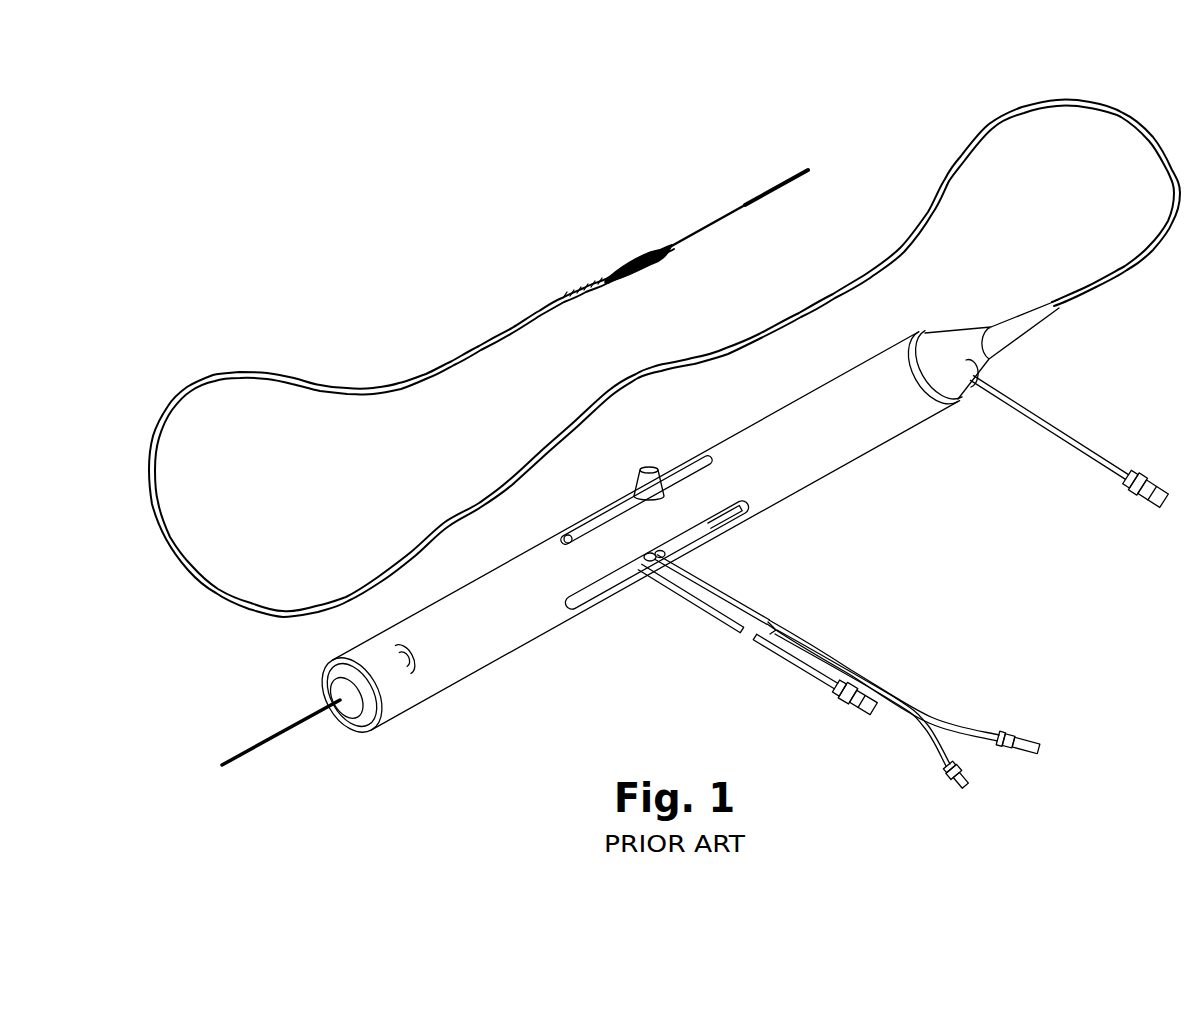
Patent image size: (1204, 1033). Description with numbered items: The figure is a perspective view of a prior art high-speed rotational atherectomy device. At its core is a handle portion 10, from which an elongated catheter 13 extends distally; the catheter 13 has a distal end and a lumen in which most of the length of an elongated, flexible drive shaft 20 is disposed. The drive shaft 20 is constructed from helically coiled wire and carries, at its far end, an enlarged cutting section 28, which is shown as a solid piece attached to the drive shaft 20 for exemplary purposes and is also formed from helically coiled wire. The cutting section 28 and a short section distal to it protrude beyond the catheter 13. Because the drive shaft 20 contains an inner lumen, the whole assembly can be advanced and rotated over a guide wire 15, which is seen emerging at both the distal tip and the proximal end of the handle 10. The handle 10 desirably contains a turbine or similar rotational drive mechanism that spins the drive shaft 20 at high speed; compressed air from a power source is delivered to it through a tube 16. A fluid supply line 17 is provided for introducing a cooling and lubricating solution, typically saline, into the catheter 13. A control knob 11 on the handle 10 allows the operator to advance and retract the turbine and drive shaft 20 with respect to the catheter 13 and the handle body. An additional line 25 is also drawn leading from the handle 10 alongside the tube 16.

The handle portion 10 is at (798, 417).
The control knob 11 is at (650, 466).
The elongated catheter 13 is at (963, 152).
The guide wire 15 is at (717, 222).
The tube 16 is at (722, 620).
The fluid supply line 17 is at (1057, 422).
The elongated, flexible drive shaft 20 is at (579, 256).
The tube 25 is at (740, 602).
The enlarged cutting section 28 is at (648, 238).